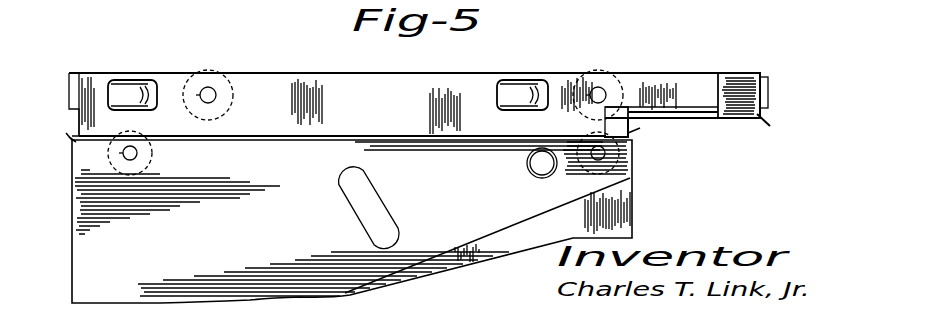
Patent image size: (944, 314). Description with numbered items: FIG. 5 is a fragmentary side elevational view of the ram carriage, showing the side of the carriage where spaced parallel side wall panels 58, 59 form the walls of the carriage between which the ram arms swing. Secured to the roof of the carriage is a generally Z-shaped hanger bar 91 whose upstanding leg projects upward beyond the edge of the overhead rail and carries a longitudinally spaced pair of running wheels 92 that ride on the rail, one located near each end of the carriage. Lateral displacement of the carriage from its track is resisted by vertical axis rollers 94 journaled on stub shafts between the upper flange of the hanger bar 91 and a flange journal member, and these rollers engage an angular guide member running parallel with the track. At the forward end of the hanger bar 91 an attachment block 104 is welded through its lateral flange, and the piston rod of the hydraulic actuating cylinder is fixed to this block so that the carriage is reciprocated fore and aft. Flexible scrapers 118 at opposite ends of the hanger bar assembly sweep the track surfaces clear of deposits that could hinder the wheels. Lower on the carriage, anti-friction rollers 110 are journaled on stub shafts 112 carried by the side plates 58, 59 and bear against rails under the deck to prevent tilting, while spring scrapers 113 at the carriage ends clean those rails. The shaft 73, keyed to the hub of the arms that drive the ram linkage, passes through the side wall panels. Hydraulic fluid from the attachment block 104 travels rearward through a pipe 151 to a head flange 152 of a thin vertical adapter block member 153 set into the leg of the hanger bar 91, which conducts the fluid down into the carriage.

The side wall panel 58 is at (90, 257).
The side wall panel 59 is at (513, 238).
The shaft 73 is at (540, 168).
The hanger bar 91 is at (423, 88).
The running wheels 92 is at (207, 73).
The vertical axis rollers 94 is at (150, 82).
The attachment block 104 is at (747, 97).
The rollers 110 is at (128, 137).
The stub shafts 112 is at (630, 156).
The scrapers 113 is at (70, 133).
The flexible scrapers 118 is at (68, 88).
The pipe 151 is at (695, 112).
The head flange 152 is at (618, 110).
The adapter block member 153 is at (638, 112).